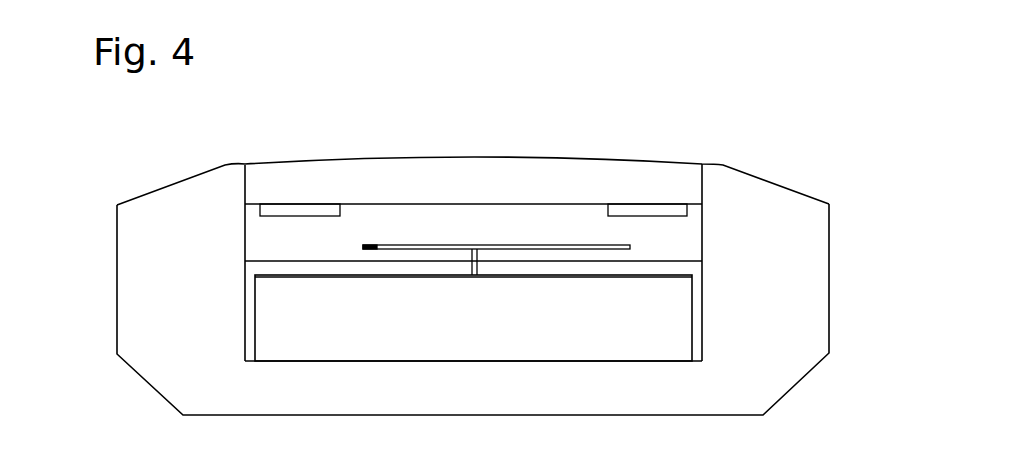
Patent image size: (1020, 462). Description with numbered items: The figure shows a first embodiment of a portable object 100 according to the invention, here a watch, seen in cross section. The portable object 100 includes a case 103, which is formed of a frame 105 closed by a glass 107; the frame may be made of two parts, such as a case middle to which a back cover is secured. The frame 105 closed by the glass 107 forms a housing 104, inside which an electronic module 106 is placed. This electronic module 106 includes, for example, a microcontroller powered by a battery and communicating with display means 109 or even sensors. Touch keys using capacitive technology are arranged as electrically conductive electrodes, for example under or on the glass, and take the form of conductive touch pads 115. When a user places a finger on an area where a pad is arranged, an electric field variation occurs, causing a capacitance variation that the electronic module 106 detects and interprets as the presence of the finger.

The portable object 100 is at (826, 156).
The case 103 is at (835, 297).
The housing 104 is at (252, 312).
The frame 105 is at (777, 363).
The electronic module 106 is at (473, 318).
The glass 107 is at (673, 173).
The display means 109 is at (363, 247).
The conductive touch pads 115 is at (662, 211).